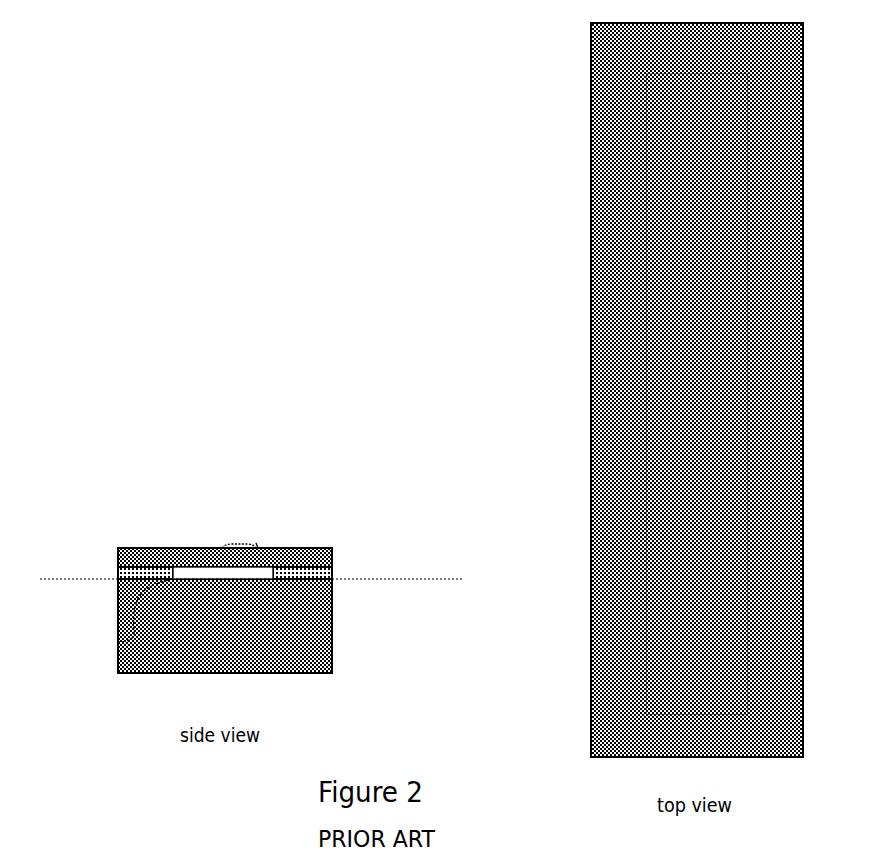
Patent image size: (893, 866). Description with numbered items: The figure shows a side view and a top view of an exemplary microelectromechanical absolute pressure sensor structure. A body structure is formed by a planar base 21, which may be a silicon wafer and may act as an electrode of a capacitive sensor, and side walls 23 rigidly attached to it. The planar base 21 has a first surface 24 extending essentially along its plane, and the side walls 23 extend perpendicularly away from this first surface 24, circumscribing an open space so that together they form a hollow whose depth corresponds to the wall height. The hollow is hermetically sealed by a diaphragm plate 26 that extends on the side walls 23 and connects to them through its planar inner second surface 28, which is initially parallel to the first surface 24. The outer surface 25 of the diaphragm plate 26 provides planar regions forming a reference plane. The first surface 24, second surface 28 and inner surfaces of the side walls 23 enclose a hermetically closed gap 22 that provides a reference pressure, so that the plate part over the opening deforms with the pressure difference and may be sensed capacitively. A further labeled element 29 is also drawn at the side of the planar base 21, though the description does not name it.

The planar base 21 is at (325, 643).
The gap 22 is at (174, 568).
The side walls 23 is at (317, 575).
The first surface 24 is at (117, 642).
The outer surface 25 is at (141, 548).
The diaphragm plate 26 is at (306, 548).
The second surface 28 is at (255, 548).
The side inlet 29 is at (117, 613).